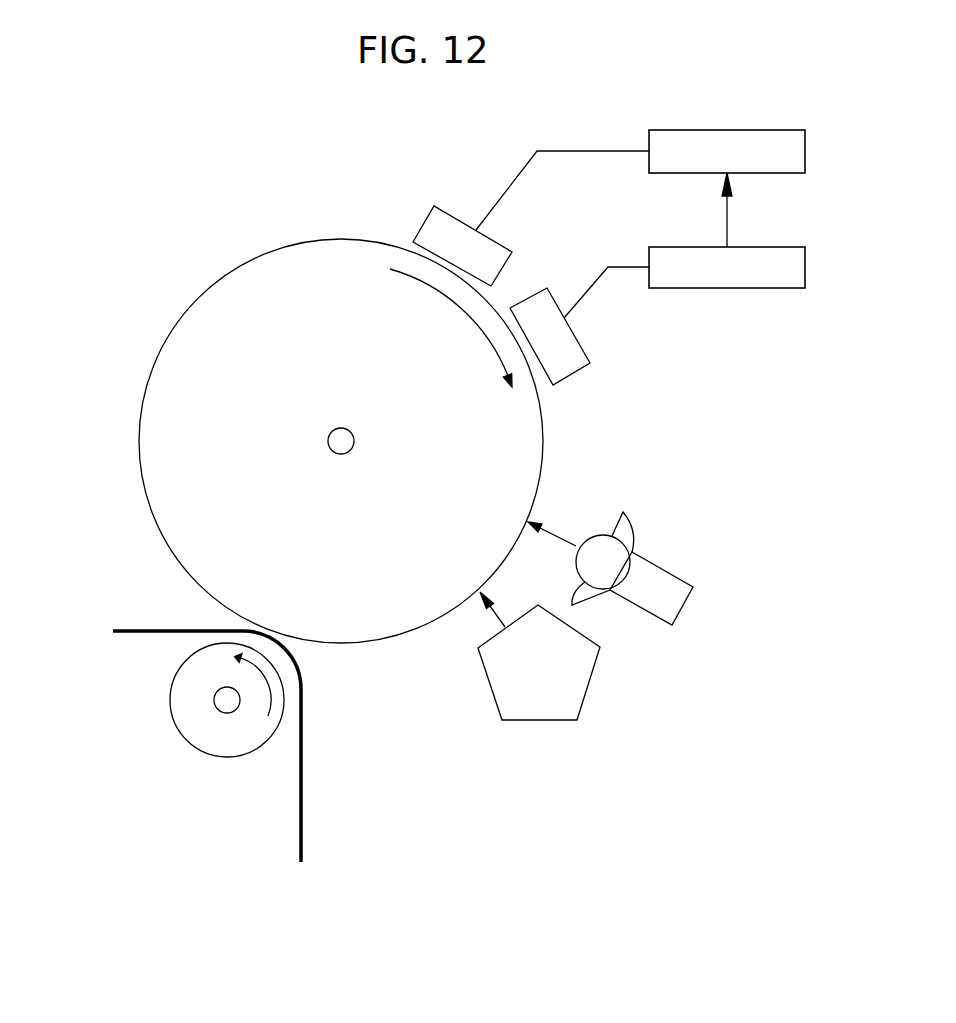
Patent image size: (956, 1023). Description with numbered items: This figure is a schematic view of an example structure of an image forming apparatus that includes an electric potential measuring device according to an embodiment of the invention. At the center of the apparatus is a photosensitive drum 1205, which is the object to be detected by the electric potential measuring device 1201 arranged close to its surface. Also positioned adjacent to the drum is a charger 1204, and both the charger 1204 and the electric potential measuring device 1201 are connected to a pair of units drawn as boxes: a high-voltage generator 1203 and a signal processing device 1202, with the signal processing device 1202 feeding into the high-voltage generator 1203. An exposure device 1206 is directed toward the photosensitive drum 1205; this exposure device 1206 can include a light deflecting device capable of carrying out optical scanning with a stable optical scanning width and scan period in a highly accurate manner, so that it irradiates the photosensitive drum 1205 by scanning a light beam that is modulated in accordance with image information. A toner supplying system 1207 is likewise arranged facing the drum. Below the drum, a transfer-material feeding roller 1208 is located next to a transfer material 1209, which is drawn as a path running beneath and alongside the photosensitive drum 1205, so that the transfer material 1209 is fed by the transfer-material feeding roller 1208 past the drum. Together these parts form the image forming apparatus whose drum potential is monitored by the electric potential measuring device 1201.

The electric potential measuring device 1201 is at (573, 363).
The signal processing device 1202 is at (762, 252).
The high-voltage generator 1203 is at (685, 138).
The charger 1204 is at (437, 217).
The photosensitive drum 1205 is at (212, 335).
The exposure device 1206 is at (670, 603).
The toner supplying system 1207 is at (570, 693).
The transfer-material feeding roller 1208 is at (212, 743).
The transfer material 1209 is at (302, 817).